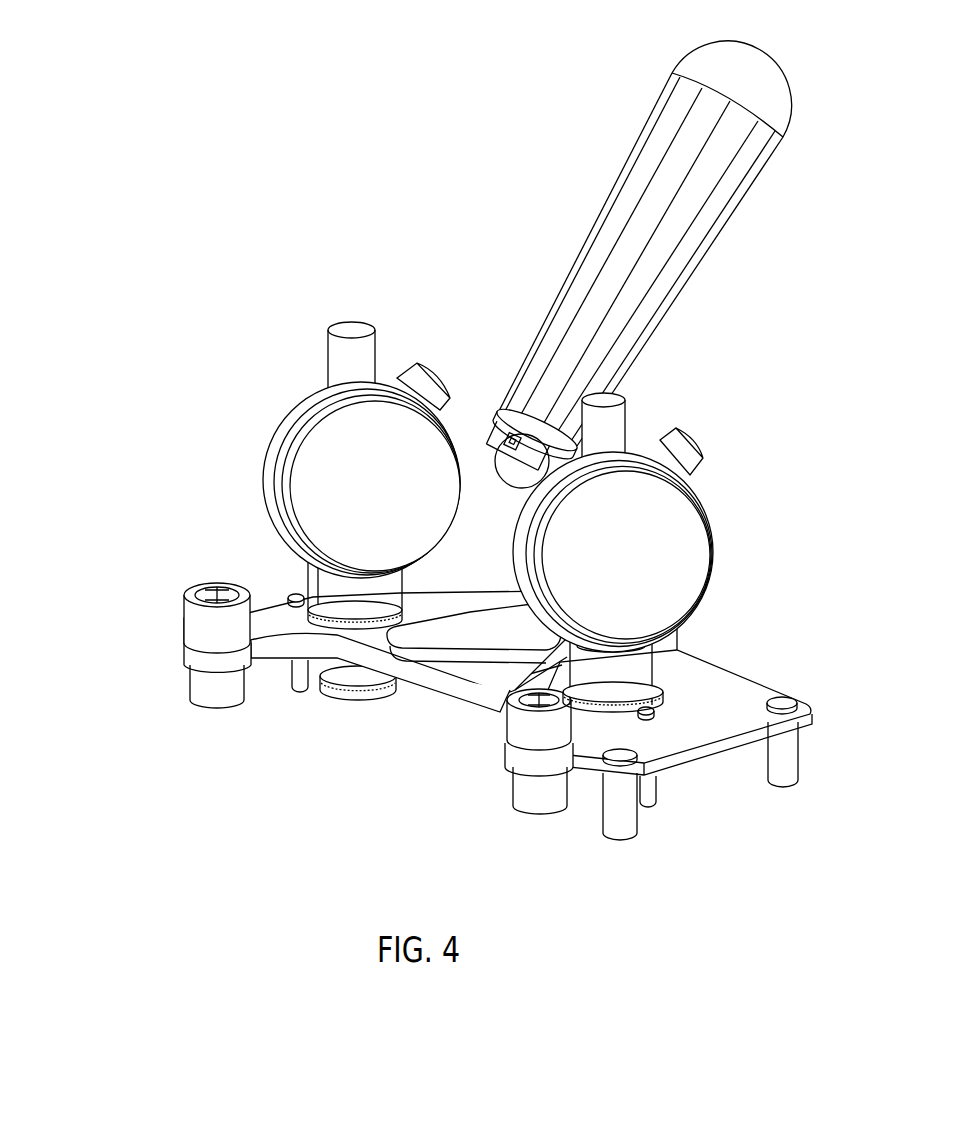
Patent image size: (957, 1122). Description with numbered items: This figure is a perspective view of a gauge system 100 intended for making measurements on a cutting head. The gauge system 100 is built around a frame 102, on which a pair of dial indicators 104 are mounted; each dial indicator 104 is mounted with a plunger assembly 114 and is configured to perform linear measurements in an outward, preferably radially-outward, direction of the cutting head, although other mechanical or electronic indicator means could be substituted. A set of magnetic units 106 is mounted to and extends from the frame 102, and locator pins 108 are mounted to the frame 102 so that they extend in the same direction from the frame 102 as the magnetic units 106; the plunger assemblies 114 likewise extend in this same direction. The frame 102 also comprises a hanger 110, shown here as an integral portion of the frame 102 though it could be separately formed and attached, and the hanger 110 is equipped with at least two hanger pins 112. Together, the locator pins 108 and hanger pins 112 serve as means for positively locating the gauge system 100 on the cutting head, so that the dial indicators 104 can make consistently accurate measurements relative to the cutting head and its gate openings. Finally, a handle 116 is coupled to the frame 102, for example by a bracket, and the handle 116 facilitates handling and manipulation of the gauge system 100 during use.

The gauge system 100 is at (393, 275).
The frame 102 is at (433, 697).
The dial indicators 104 is at (290, 392).
The magnetic units 106 is at (190, 700).
The locator pins 108 is at (658, 790).
The hanger 110 is at (745, 700).
The hanger pins 112 is at (640, 825).
The plunger assembly 114 is at (327, 700).
The handle 116 is at (597, 210).